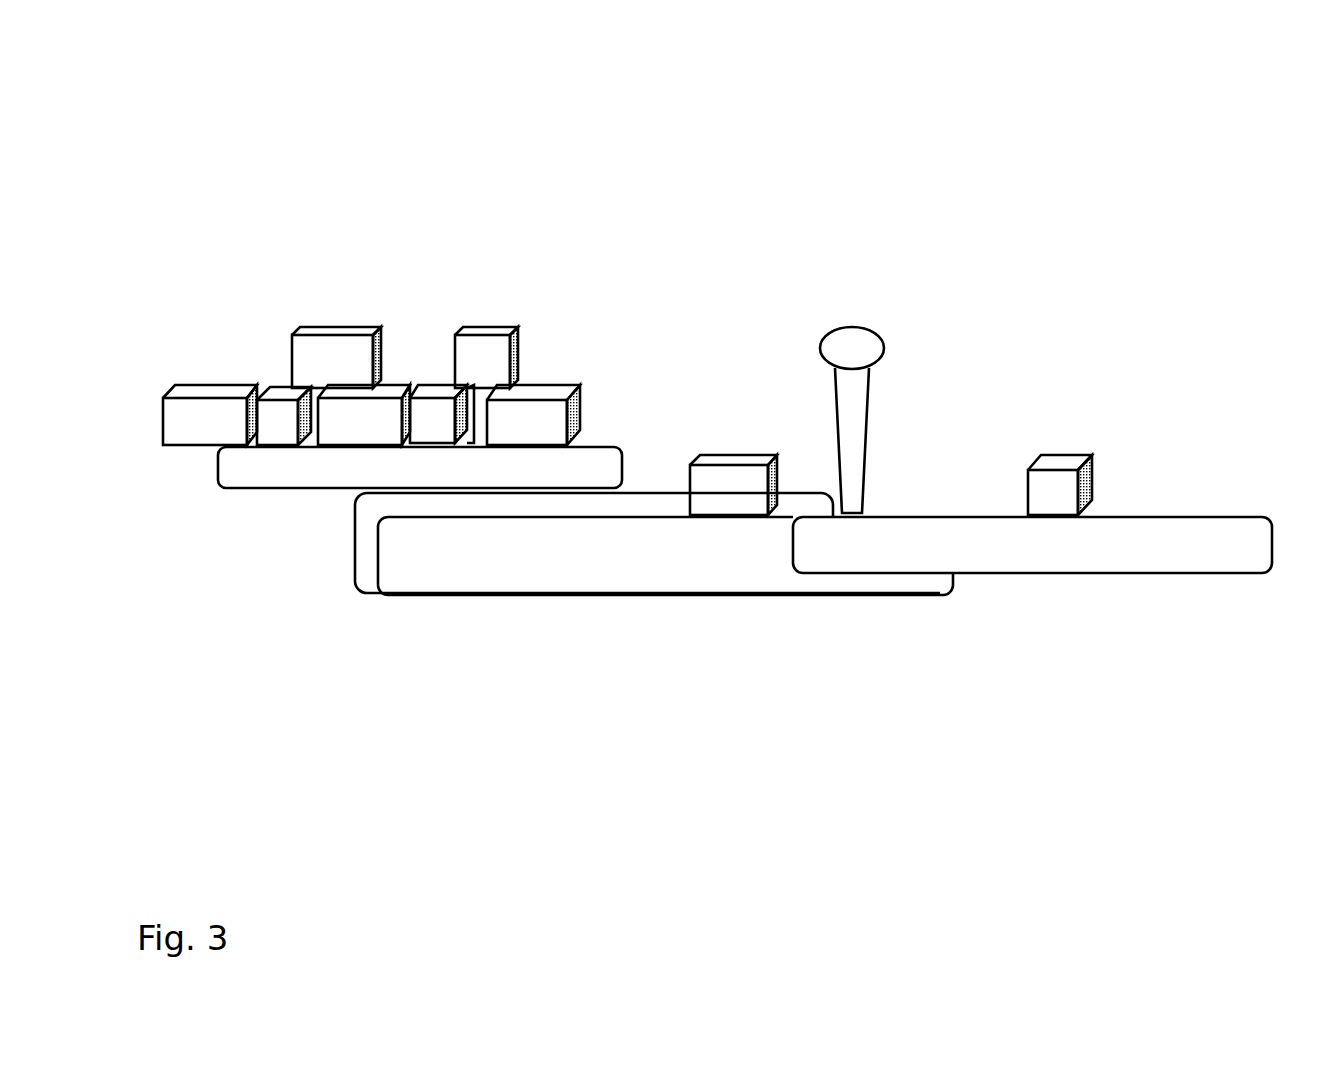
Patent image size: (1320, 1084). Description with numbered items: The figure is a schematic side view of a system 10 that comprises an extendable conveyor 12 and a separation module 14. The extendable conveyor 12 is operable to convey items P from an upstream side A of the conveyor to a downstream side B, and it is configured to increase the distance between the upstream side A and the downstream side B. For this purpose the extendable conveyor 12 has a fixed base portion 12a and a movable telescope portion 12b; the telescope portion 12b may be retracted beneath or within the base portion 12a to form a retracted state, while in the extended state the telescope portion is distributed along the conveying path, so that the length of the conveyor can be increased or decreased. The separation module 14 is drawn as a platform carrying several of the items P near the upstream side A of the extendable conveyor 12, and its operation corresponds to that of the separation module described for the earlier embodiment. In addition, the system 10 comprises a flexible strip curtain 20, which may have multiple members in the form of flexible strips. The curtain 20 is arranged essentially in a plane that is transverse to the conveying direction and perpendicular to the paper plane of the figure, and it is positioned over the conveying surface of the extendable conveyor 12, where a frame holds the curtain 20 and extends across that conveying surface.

The system 10 is at (227, 127).
The extendable conveyor 12 is at (778, 623).
The fixed base portion 12a is at (665, 556).
The movable telescope portion 12b is at (1032, 545).
The separation module 14 is at (277, 497).
The flexible strip curtain 20 is at (868, 432).
The items P is at (567, 312).
The upstream side A is at (610, 735).
The downstream side B is at (1262, 722).